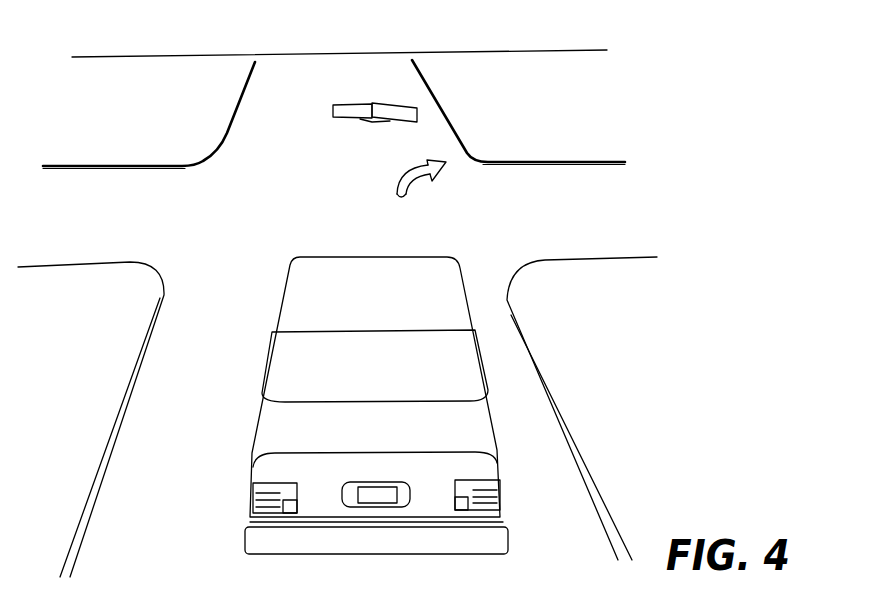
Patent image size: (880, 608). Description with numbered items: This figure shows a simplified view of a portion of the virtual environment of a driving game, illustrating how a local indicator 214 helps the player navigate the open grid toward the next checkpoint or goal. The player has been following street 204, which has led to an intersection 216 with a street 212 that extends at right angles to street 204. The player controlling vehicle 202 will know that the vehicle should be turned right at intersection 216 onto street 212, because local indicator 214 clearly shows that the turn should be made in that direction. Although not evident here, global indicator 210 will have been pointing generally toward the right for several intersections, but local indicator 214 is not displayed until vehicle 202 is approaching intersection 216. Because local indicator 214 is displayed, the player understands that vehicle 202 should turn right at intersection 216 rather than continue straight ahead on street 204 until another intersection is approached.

The vehicle 202 is at (497, 418).
The street 204 is at (558, 467).
The global indicator 210 is at (347, 105).
The street 212 is at (545, 170).
The local indicator 214 is at (397, 186).
The intersection 216 is at (299, 226).